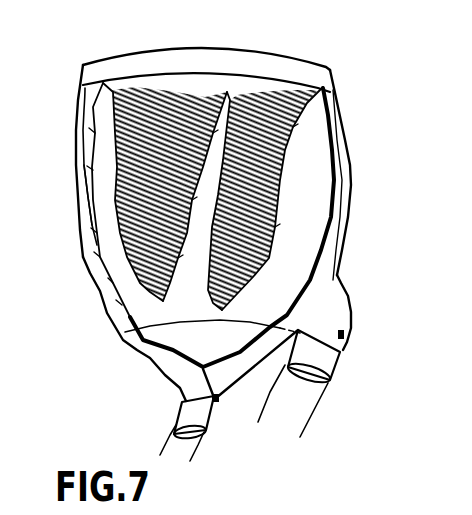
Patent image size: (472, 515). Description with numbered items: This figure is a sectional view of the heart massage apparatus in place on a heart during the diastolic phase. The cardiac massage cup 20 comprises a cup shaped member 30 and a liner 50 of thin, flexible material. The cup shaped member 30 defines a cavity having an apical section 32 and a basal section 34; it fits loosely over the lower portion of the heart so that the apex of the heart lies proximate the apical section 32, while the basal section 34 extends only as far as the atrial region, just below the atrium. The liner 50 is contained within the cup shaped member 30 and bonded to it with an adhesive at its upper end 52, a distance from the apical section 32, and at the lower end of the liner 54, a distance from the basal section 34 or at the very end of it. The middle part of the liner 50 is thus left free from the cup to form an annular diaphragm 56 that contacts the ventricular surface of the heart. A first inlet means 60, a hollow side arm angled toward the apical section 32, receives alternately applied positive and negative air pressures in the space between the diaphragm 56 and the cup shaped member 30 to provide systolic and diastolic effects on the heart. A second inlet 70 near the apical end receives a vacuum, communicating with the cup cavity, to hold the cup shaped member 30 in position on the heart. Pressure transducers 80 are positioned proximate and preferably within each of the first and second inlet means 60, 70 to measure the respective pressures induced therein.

The cardiac massage cup 20 is at (227, 49).
The basal section 34 is at (287, 55).
The cup shaped member 30 is at (349, 130).
The apical section 32 is at (143, 356).
The lower end of the liner 54 is at (85, 91).
The annular diaphragm 56 is at (88, 197).
The liner 50 is at (337, 183).
The upper end of the liner 52 is at (125, 312).
The first inlet means 60 is at (333, 312).
The second inlet 70 is at (180, 387).
The pressure transducers 80 is at (220, 405).